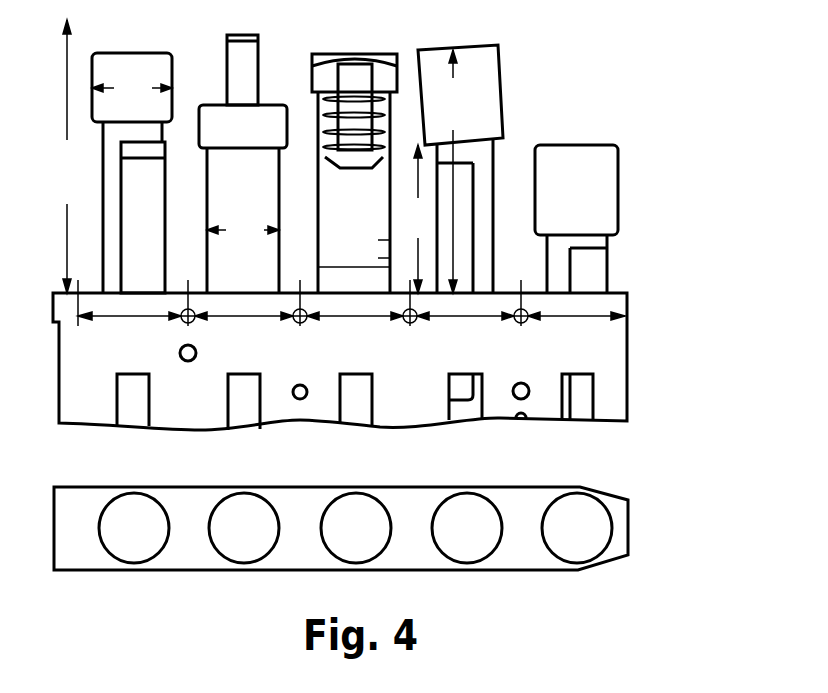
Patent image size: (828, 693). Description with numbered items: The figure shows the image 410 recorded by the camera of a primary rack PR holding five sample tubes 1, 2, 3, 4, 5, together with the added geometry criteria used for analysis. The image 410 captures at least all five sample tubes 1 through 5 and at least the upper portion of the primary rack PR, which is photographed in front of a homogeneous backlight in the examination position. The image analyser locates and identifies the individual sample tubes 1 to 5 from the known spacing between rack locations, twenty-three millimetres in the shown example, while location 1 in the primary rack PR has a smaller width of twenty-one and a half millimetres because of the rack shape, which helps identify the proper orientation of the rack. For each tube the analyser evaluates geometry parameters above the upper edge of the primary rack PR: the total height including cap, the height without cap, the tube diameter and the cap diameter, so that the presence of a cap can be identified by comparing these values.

The image 410 is at (629, 106).
The primary rack PR is at (613, 368).
The sample tube 1 is at (577, 528).
The sample tube 2 is at (467, 528).
The sample tube 3 is at (356, 528).
The sample tube 4 is at (244, 528).
The sample tube 5 is at (134, 528).